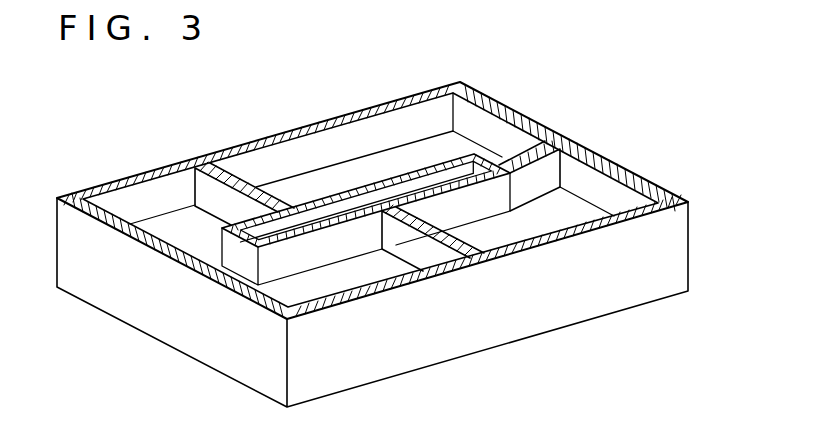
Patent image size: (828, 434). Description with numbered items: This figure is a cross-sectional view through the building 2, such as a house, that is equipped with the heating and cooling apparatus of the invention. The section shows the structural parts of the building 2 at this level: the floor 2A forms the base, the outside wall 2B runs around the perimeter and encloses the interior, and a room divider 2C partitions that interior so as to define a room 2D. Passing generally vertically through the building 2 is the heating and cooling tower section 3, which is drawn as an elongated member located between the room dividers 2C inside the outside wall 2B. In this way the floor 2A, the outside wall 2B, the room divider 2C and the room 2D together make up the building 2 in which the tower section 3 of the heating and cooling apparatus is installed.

The building 2 is at (143, 310).
The floor 2A is at (571, 218).
The outside wall 2B is at (494, 104).
The room divider 2C is at (534, 153).
The room 2D is at (265, 170).
The cooling tower section 3 is at (369, 203).